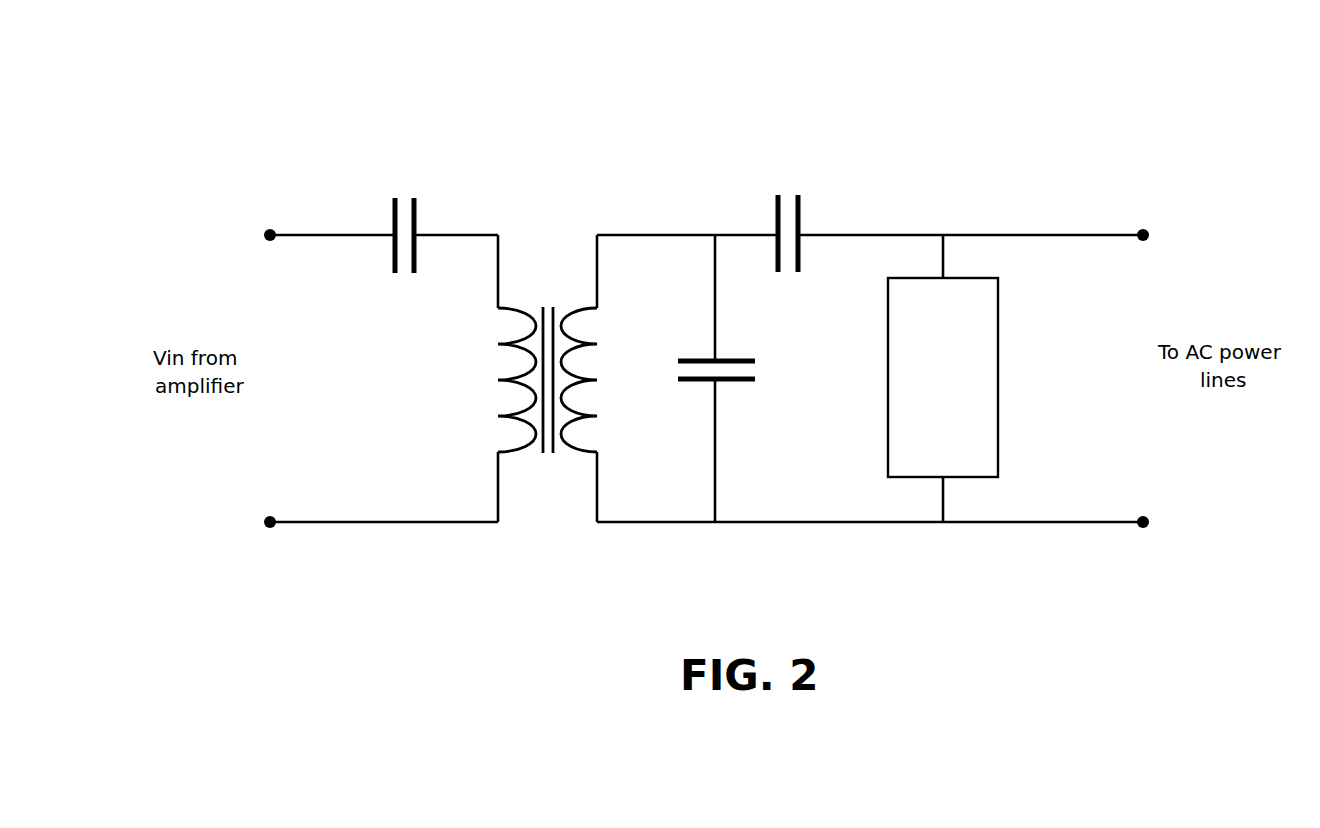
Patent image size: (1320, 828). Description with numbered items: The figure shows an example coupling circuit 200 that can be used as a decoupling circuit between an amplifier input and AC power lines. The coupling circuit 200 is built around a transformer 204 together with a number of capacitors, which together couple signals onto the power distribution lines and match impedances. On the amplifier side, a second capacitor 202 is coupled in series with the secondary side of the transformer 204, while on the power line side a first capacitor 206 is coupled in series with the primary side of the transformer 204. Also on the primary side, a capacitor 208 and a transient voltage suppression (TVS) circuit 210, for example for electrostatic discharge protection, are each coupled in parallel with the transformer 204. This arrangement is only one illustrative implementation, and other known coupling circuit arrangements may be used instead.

The coupling circuit 200 is at (183, 123).
The second capacitor 202 is at (421, 222).
The transformer 204 is at (578, 325).
The first capacitor 206 is at (804, 212).
The capacitor 208 is at (734, 370).
The transient voltage suppression (TVS) circuit 210 is at (943, 377).